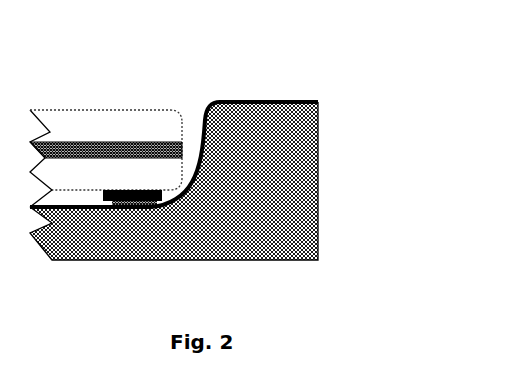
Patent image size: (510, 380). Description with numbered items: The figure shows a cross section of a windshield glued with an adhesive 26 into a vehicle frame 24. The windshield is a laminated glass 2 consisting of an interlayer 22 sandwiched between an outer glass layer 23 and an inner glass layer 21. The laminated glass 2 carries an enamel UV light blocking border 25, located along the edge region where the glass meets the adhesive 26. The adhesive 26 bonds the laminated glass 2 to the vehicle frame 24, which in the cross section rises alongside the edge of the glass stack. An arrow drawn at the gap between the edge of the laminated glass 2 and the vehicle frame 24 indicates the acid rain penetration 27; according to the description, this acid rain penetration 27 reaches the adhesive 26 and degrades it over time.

The laminated glass 2 is at (55, 108).
The inner glass layer 21 is at (60, 170).
The interlayer 22 is at (105, 143).
The outer glass layer 23 is at (137, 123).
The vehicle frame 24 is at (295, 170).
The enamel UV light blocking border 25 is at (105, 201).
The adhesive 26 is at (140, 210).
The acid rain penetration 27 is at (195, 116).